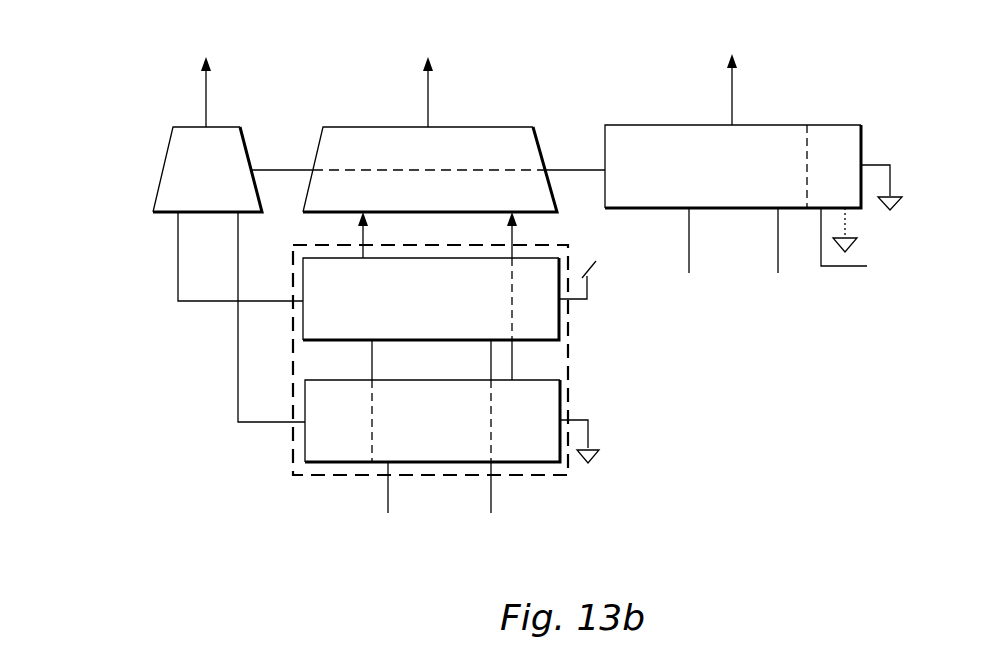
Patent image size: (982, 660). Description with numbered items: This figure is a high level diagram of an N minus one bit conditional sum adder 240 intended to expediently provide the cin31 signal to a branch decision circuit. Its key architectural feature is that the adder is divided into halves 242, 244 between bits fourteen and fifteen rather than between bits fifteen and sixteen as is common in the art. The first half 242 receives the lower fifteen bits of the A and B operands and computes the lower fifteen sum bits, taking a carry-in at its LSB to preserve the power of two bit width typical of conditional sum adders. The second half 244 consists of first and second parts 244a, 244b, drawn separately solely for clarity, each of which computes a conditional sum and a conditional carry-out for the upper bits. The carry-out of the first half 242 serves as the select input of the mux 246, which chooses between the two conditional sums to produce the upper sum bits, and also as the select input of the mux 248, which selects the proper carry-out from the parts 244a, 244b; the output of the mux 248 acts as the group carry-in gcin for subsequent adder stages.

The conditional sum adder 240 is at (132, 143).
The first half 242 is at (752, 164).
The second half 244 is at (294, 456).
The first part 244a is at (470, 425).
The second part 244b is at (475, 307).
The mux 246 is at (455, 203).
The mux 248 is at (238, 203).